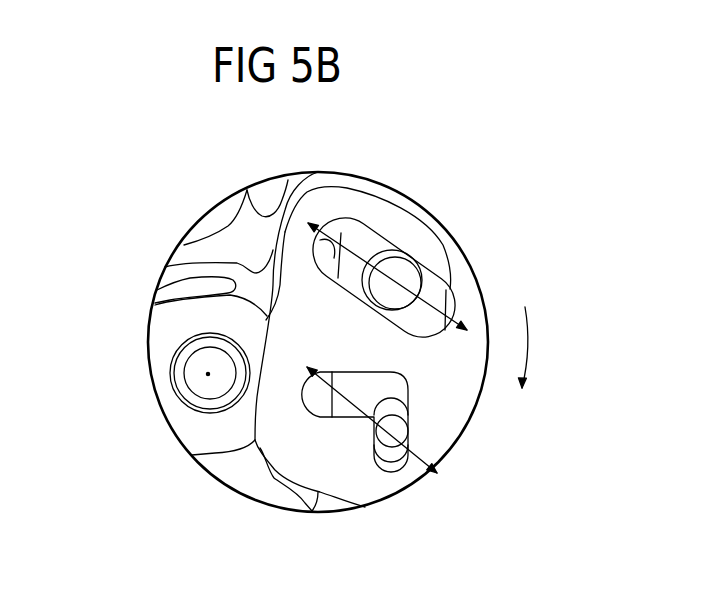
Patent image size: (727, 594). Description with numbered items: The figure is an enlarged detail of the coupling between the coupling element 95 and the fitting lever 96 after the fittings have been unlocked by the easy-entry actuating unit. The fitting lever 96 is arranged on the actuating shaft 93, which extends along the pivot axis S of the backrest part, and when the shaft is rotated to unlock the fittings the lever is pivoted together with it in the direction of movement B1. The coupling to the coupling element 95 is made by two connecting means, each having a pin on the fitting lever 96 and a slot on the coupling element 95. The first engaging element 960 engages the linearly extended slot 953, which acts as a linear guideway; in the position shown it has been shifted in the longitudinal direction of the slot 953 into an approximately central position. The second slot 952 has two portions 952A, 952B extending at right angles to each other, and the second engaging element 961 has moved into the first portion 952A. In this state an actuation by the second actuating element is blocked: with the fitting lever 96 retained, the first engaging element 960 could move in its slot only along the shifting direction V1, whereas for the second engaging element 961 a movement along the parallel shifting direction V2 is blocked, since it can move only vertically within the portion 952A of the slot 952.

The coupling element 95 is at (415, 235).
The slot 953 is at (443, 283).
The engaging element 960 is at (407, 267).
The shifting direction V1 is at (361, 258).
The fitting lever 96 is at (178, 313).
The actuating shaft 93 is at (190, 355).
The pivot axis S is at (208, 375).
The slot 952 is at (389, 437).
The first portion 952A is at (454, 466).
The second portion 952B is at (333, 372).
The engaging element 961 is at (400, 440).
The shifting direction V2 is at (347, 400).
The direction of movement B1 is at (538, 347).